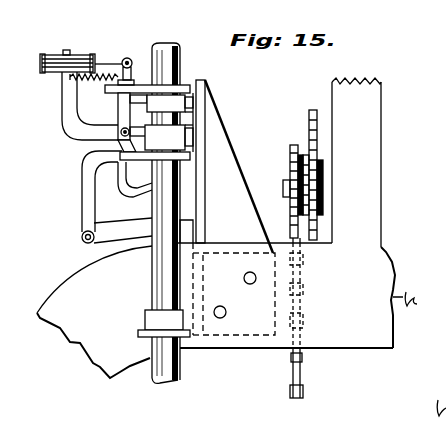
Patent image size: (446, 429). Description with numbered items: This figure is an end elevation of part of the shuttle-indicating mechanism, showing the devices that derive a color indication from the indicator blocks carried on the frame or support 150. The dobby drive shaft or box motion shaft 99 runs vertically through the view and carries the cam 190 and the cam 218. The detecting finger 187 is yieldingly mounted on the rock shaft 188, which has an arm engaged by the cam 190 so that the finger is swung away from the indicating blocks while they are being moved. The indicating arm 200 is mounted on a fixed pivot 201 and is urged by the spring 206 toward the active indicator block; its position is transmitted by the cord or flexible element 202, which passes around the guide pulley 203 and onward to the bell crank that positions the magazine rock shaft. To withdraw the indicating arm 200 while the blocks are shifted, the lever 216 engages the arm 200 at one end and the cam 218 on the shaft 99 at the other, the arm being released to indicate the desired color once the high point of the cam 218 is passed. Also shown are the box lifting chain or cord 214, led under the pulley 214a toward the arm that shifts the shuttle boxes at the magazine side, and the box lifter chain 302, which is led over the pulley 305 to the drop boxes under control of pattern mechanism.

The shaft 99 is at (181, 365).
The frame or support 150 is at (209, 132).
The detecting finger 187 is at (82, 212).
The rock shaft 188 is at (94, 298).
The cam 190 is at (190, 157).
The indicating arm 200 is at (132, 191).
The fixed pivot 201 is at (121, 133).
The cord or flexible element 202 is at (124, 58).
The guide pulley 203 is at (45, 53).
The spring 206 is at (112, 86).
The box lifting chain or cord 214 is at (312, 112).
The pulley 214a is at (323, 178).
The lever 216 is at (117, 100).
The cam 218 is at (180, 90).
The box lifter chain 302 is at (300, 380).
The pulley 305 is at (290, 157).